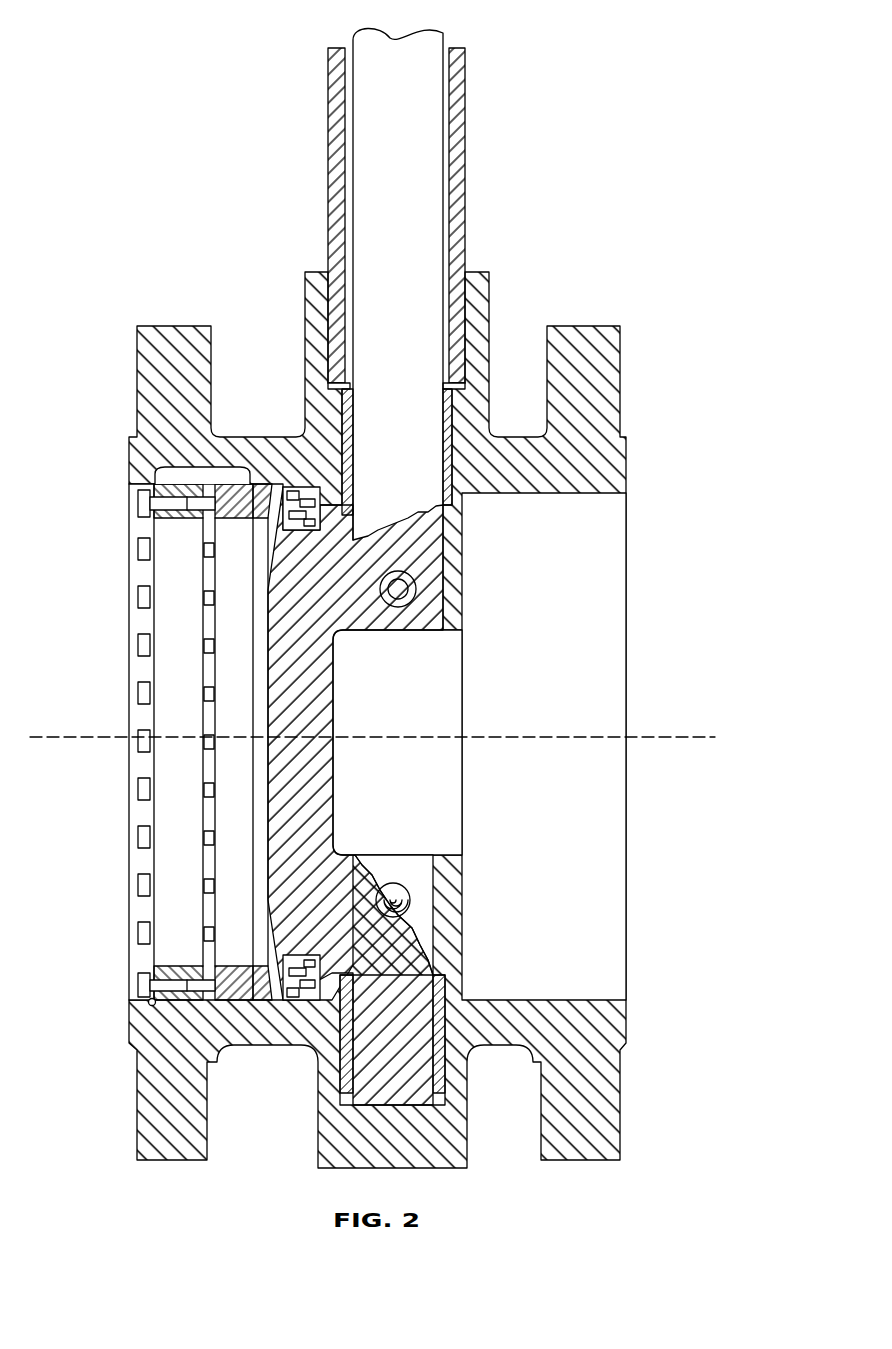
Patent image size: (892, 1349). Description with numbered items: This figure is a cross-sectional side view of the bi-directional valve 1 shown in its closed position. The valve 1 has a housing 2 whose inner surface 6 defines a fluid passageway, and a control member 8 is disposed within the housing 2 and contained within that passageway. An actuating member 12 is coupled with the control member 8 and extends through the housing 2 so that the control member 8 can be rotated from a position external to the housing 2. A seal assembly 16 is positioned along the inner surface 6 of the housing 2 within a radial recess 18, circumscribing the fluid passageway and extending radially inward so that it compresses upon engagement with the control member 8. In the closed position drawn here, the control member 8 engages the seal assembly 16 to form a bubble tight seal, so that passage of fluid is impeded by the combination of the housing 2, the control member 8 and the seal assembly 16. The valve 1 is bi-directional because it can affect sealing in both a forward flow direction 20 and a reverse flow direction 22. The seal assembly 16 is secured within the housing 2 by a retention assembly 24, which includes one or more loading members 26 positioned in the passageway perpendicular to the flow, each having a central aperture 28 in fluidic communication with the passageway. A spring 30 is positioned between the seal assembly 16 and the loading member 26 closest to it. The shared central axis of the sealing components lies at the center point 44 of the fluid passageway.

The bi-directional valve 1 is at (100, 88).
The housing 2 is at (620, 362).
The inner surface 6 is at (130, 484).
The control member 8 is at (333, 662).
The actuating member 12 is at (445, 35).
The seal assembly 16 is at (305, 985).
The radial recess 18 is at (302, 500).
The forward flow direction 20 is at (580, 577).
The reverse flow direction 22 is at (197, 671).
The retention assembly 24 is at (210, 471).
The loading member 26 is at (282, 970).
The central aperture 28 is at (178, 577).
The spring 30 is at (255, 1003).
The center point 44 is at (705, 735).